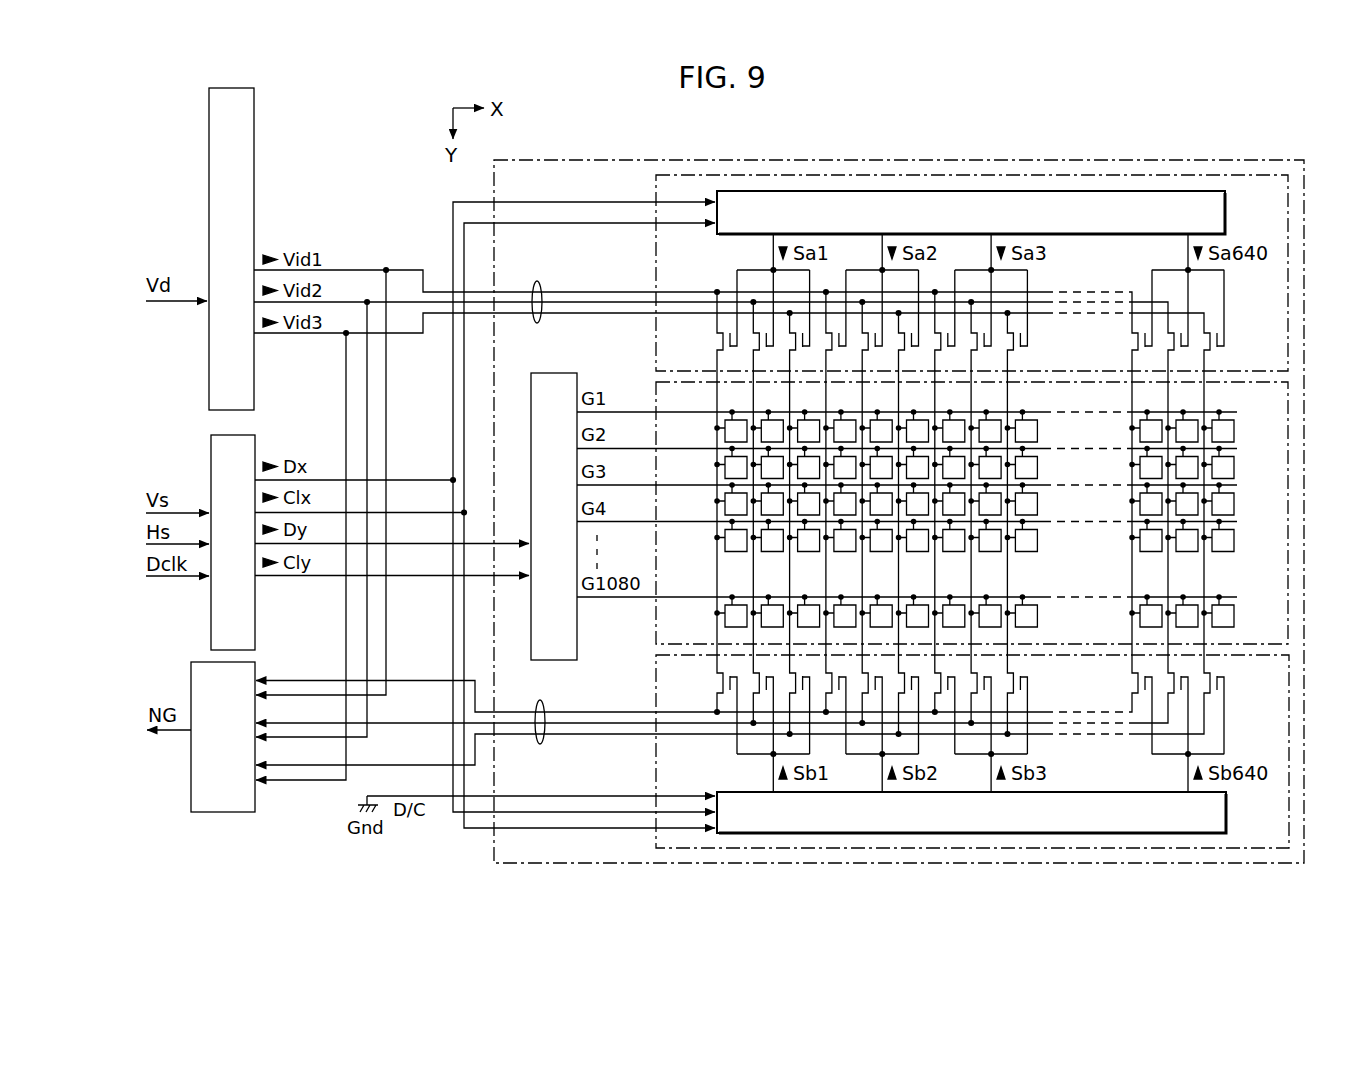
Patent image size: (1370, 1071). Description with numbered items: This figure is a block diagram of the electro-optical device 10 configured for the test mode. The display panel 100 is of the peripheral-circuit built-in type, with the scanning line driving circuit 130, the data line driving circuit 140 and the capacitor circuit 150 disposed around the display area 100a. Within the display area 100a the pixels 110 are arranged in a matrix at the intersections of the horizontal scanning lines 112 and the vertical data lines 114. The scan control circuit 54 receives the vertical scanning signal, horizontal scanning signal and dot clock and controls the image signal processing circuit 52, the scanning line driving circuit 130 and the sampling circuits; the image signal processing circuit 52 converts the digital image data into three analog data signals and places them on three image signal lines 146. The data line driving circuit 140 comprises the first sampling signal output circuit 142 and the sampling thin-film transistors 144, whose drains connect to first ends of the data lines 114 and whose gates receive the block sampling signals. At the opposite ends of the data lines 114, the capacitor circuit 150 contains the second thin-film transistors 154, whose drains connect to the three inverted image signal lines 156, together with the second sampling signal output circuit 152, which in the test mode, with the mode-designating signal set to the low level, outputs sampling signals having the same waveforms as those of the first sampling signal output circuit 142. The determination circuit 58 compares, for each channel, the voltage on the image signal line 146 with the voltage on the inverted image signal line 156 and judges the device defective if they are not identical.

The electro-optical device 10 is at (270, 60).
The image signal processing circuit 52 is at (254, 220).
The scan control circuit 54 is at (255, 442).
The determination circuit 58 is at (250, 813).
The display panel 100 is at (613, 159).
The display area 100a is at (636, 383).
The pixel 110 is at (1234, 434).
The scanning line 112 is at (708, 412).
The data line 114 is at (1134, 395).
The scanning line driving circuit 130 is at (557, 373).
The data line driving circuit 140 is at (655, 255).
The first sampling signal output circuit 142 is at (1226, 208).
The thin-film transistor 144 is at (1134, 338).
The image signal line 146 is at (537, 323).
The capacitor circuit 150 is at (655, 768).
The second sampling signal output circuit 152 is at (1226, 812).
The thin-film transistor 154 is at (1014, 676).
The inverted image signal line 156 is at (540, 700).